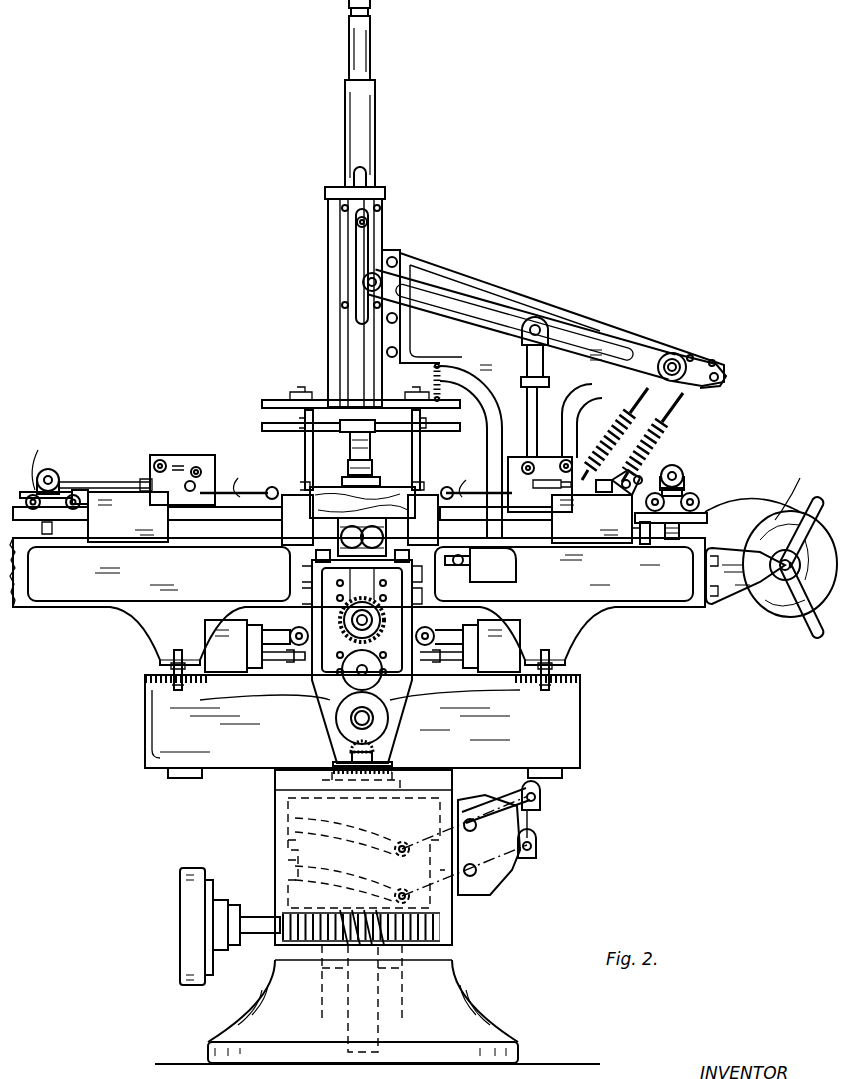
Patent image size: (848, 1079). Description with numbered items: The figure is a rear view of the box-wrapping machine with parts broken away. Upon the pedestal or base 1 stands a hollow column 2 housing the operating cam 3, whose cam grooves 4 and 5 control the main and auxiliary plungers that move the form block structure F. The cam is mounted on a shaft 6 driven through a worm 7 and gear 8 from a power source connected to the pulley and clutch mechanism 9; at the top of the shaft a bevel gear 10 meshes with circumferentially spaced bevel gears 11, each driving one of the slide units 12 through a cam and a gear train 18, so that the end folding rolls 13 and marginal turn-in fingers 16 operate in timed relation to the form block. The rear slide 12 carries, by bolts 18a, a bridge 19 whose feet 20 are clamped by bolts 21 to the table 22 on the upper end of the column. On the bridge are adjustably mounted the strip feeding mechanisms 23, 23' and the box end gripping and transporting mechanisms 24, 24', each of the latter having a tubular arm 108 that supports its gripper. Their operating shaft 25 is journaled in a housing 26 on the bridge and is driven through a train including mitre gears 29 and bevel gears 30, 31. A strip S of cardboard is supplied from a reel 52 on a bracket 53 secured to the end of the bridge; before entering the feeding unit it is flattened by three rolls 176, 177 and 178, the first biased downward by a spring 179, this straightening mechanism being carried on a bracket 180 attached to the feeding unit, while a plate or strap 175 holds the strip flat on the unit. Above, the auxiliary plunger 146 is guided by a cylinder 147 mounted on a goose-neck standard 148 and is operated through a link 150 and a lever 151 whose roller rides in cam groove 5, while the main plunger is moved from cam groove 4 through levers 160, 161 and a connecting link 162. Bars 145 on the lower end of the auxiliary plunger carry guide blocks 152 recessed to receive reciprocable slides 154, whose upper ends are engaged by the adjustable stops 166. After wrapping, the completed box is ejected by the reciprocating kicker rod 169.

The pedestal or base 1 is at (488, 1036).
The hollow column 2 is at (454, 913).
The operating cam 3 is at (300, 852).
The cam groove 4 is at (292, 826).
The cam groove 5 is at (292, 874).
The shaft 6 is at (362, 1000).
The worm 7 is at (352, 942).
The gear 8 is at (442, 928).
The pulley and clutch mechanism 9 is at (190, 946).
The bevel gear 10 is at (388, 770).
The bevel gear 11 is at (378, 752).
The slide unit 12 is at (345, 690).
The end folding roll 13 is at (312, 652).
The marginal turn-in finger 16 is at (300, 656).
The gear train 18 is at (345, 730).
The bolt 18a is at (312, 580).
The bridge 19 is at (357, 601).
The foot 20 is at (160, 650).
The bolt 21 is at (178, 650).
The table 22 is at (148, 688).
The strip feeding mechanism 23 is at (592, 519).
The strip feeding mechanism 23' is at (128, 517).
The box end gripping and transporting mechanism 24 is at (423, 520).
The box end gripping and transporting mechanism 24' is at (297, 520).
The operating shaft 25 is at (246, 512).
The housing 26 is at (360, 537).
The mitre gear 29 is at (340, 622).
The bevel gear 30 is at (316, 556).
The bevel gear 31 is at (409, 556).
The reel 52 is at (812, 630).
The bracket 53 is at (727, 598).
The tubular arm 108 is at (290, 488).
The bar 145 is at (262, 429).
The auxiliary plunger 146 is at (376, 140).
The cylinder 147 is at (384, 232).
The goose-neck standard 148 is at (565, 424).
The link 150 is at (538, 810).
The lever 151 is at (518, 858).
The guide block 152 is at (298, 430).
The slide 154 is at (308, 456).
The lever 160 is at (496, 800).
The lever 161 is at (485, 310).
The connecting link 162 is at (538, 410).
The adjustable stop 166 is at (268, 400).
The kicker rod 169 is at (478, 567).
The plate or strap 175 is at (630, 481).
The roll 176 is at (680, 470).
The roll 177 is at (664, 486).
The roll 178 is at (690, 498).
The spring 179 is at (680, 529).
The bracket 180 is at (648, 540).
The form block structure F is at (392, 486).
The strip S is at (50, 468).